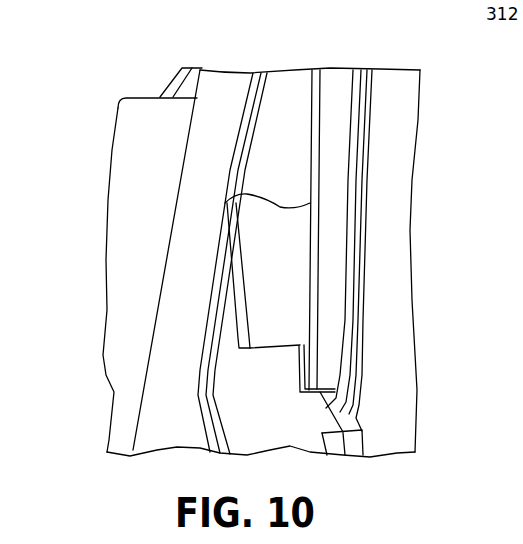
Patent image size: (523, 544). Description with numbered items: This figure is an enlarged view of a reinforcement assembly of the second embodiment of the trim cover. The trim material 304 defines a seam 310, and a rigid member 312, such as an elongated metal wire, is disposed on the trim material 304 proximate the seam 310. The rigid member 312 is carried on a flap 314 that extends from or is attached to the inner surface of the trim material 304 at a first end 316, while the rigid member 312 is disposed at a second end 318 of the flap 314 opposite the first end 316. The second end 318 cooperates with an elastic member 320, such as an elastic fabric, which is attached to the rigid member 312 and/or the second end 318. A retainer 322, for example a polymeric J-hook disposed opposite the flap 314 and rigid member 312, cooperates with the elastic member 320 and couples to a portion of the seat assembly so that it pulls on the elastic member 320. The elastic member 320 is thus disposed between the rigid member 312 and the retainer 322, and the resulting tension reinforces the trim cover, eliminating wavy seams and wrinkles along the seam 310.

The trim material 304 is at (185, 338).
The seam 310 is at (387, 183).
The rigid member 312 is at (313, 108).
The flap 314 is at (330, 258).
The first end 316 is at (367, 225).
The second end 318 is at (307, 180).
The elastic member 320 is at (280, 270).
The retainer 322 is at (228, 273).